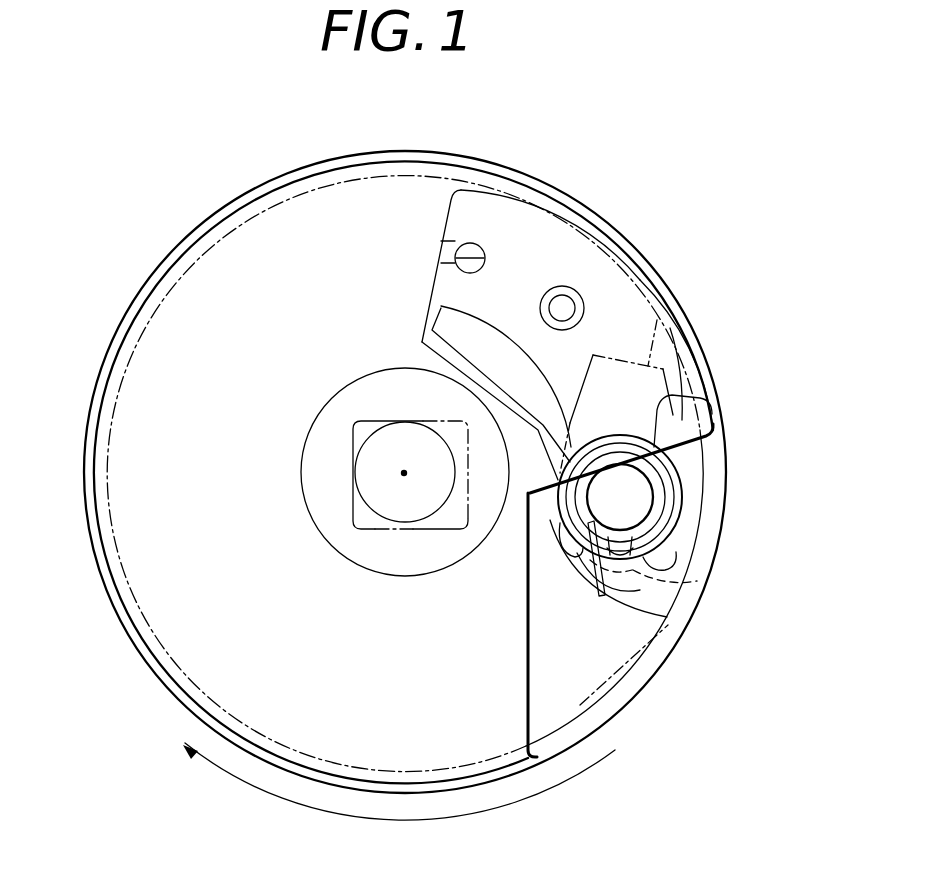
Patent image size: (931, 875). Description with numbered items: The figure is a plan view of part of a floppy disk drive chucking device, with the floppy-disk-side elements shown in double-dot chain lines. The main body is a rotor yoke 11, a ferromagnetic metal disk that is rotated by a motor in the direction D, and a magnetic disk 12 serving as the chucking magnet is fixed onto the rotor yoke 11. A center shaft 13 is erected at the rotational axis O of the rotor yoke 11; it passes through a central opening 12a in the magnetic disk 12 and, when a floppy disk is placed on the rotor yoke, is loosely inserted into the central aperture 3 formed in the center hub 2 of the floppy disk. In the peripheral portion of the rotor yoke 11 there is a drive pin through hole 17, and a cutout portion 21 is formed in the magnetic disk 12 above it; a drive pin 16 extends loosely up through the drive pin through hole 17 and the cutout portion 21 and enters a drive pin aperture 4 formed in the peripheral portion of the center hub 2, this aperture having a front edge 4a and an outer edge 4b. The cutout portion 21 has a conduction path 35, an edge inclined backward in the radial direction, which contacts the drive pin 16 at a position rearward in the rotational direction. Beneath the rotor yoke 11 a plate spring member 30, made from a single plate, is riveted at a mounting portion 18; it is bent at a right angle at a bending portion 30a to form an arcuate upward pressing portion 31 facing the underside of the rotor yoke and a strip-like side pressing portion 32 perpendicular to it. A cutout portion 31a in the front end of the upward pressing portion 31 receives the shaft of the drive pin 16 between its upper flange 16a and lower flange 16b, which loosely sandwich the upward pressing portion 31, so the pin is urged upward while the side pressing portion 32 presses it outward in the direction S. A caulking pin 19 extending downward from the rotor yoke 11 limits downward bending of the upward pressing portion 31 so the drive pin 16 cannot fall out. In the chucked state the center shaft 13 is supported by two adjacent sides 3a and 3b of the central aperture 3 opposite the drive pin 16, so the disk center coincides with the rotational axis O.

The center hub 2 is at (650, 677).
The central aperture 3 is at (366, 486).
The side of the central aperture 3a is at (355, 447).
The side of the central aperture 3b is at (387, 420).
The drive pin aperture 4 is at (657, 318).
The front edge 4a is at (683, 640).
The outer edge 4b is at (716, 428).
The rotor yoke 11 is at (128, 302).
The magnetic disk 12 is at (590, 715).
The central opening 12a is at (310, 427).
The center shaft 13 is at (448, 505).
The drive pin 16 is at (638, 502).
The upper flange 16a is at (693, 493).
The lower flange 16b is at (620, 497).
The drive pin through hole 17 is at (665, 606).
The mounting portion 18 is at (481, 256).
The caulking pin 19 is at (562, 286).
The cutout portion 21 is at (528, 650).
The plate spring member 30 is at (499, 290).
The bending portion 30a is at (430, 280).
The upward pressing portion 31 is at (608, 290).
The cutout portion 31a is at (690, 576).
The side pressing portion 32 is at (435, 383).
The conduction path 35 is at (700, 413).
The rotational direction D is at (383, 770).
The rotational axis O is at (402, 475).
The outward pressing direction S is at (578, 599).